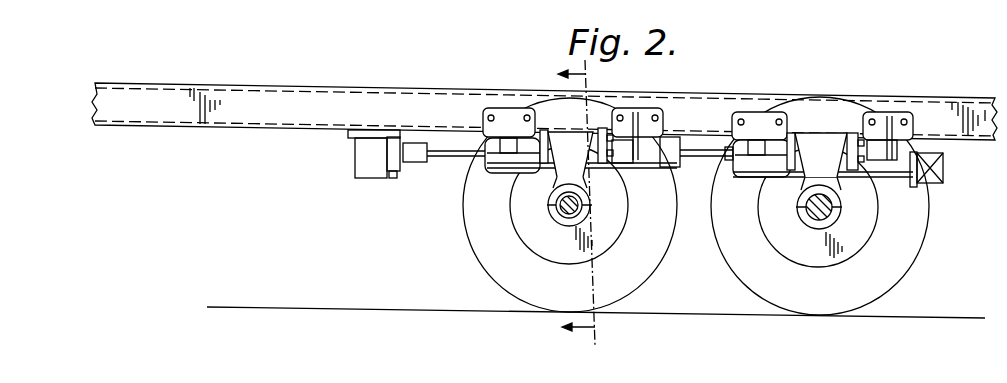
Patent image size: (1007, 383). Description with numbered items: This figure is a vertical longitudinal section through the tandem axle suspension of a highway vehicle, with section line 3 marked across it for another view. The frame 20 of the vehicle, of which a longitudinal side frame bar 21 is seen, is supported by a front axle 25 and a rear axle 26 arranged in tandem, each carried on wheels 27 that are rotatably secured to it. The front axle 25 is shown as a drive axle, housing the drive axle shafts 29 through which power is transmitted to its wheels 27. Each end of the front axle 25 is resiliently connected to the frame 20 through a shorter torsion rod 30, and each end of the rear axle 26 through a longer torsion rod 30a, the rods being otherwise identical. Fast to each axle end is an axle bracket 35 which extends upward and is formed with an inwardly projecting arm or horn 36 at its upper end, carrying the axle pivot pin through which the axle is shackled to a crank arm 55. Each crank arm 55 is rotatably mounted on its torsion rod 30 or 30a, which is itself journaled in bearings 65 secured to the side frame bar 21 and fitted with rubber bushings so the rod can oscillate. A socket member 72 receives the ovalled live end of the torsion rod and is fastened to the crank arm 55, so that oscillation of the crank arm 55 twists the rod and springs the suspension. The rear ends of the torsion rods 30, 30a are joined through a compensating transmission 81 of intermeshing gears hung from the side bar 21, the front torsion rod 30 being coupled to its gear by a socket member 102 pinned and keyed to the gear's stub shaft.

The frame 20 is at (283, 73).
The longitudinal side frame bar 21 is at (132, 92).
The front axle 25 is at (560, 218).
The rear axle 26 is at (810, 212).
The wheel 27 is at (478, 238).
The drive axle shaft 29 is at (563, 208).
The torsion rod 30 is at (448, 157).
The torsion rod 30a is at (708, 165).
The axle bracket 35 is at (558, 185).
The arm or horn 36 is at (570, 138).
The crank arm 55 is at (497, 172).
The bearing 65 is at (508, 126).
The socket member 72 is at (937, 170).
The compensating transmission 81 is at (355, 152).
The socket member 102 is at (418, 163).
The section line 3- 3 is at (580, 203).